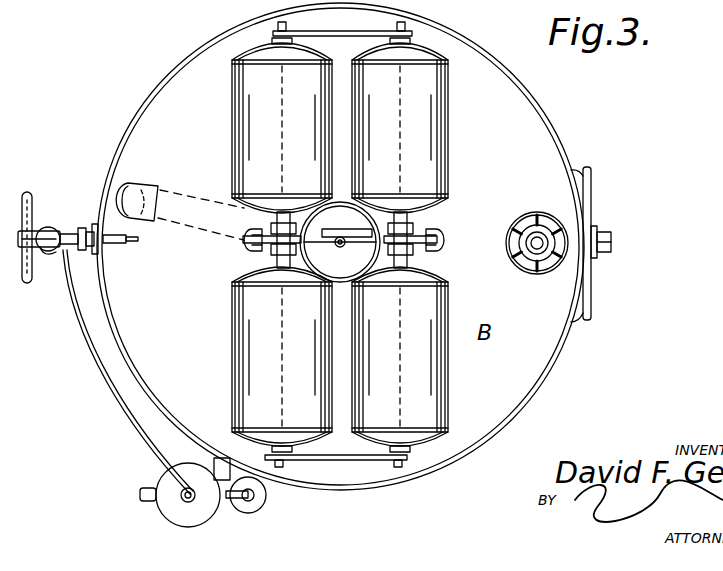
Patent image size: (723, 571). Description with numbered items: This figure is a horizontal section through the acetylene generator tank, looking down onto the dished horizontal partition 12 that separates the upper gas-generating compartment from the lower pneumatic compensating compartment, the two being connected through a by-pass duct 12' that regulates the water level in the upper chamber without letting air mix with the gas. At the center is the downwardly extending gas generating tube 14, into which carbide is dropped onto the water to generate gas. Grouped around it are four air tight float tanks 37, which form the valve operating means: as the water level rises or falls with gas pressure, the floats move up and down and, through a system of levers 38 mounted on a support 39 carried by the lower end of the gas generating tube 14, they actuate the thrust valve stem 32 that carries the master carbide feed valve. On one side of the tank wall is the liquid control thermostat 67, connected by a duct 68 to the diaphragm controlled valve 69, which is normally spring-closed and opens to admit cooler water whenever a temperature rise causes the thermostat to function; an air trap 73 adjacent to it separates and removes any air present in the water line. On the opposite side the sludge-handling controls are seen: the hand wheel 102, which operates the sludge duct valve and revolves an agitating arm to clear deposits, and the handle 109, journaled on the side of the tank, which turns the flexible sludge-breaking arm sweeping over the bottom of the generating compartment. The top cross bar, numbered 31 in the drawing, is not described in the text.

The dished horizontal partition 12 is at (354, 246).
The by-pass duct 12' is at (180, 193).
The gas generating tube 14 is at (438, 227).
The top cross bar 31 is at (461, 26).
The thrust valve stem 32 is at (345, 244).
The air tight float tanks 37 is at (240, 343).
The levers 38 is at (250, 253).
The support 39 is at (246, 218).
The liquid control thermostat 67 is at (84, 229).
The duct 68 is at (111, 398).
The diaphragm controlled valve 69 is at (200, 512).
The air trap 73 is at (256, 503).
The hand wheel 102 is at (31, 192).
The handle 109 is at (48, 252).